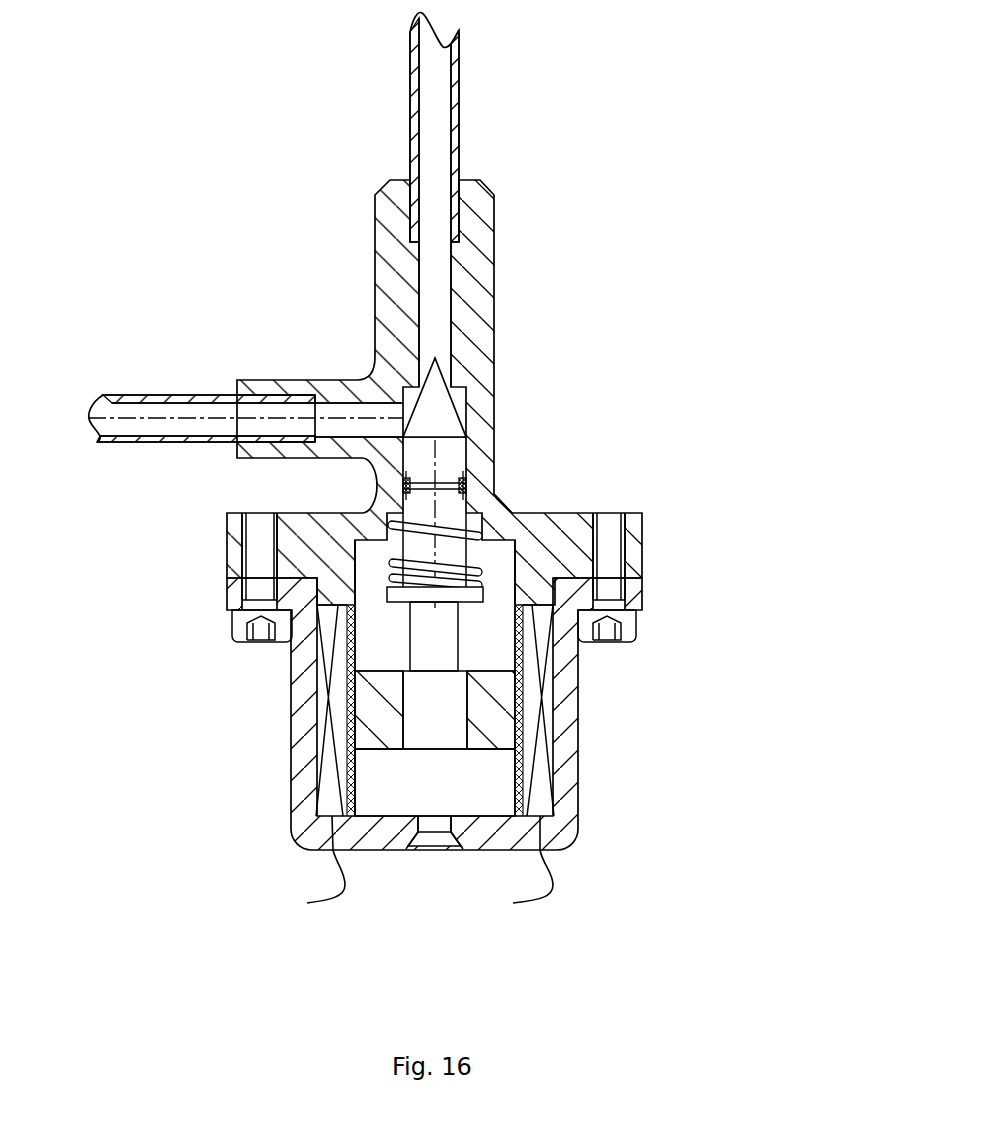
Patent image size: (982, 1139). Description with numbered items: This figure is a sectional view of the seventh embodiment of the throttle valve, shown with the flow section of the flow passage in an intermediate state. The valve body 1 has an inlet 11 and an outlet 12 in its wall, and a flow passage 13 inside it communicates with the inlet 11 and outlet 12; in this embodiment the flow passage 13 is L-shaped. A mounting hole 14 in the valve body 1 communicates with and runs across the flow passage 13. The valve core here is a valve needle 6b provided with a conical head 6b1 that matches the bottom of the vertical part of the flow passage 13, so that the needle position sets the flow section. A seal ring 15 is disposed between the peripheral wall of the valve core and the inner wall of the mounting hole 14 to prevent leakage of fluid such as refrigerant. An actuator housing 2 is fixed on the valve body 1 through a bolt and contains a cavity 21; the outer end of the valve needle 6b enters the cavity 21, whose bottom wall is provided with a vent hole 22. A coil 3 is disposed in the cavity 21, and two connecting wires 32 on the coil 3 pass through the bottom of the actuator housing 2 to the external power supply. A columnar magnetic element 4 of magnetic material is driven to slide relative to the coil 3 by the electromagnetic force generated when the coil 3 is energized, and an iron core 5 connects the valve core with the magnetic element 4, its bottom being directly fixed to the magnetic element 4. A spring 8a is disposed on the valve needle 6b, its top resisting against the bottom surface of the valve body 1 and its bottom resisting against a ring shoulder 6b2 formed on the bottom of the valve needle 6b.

The valve body 1 is at (310, 542).
The actuator housing 2 is at (293, 717).
The coil 3 is at (547, 697).
The magnetic element 4 is at (490, 738).
The iron core 5 is at (440, 642).
The valve needle 6b is at (427, 461).
The conical head 6b1 is at (447, 412).
The ring shoulder 6b2 is at (473, 598).
The spring 8a is at (477, 570).
The inlet 11 is at (223, 415).
The outlet 12 is at (437, 208).
The flow passage 13 is at (340, 415).
The mounting hole 14 is at (476, 507).
The seal ring 15 is at (466, 489).
The cavity 21 is at (397, 792).
The vent hole 22 is at (434, 825).
The connecting wires 32 is at (345, 887).